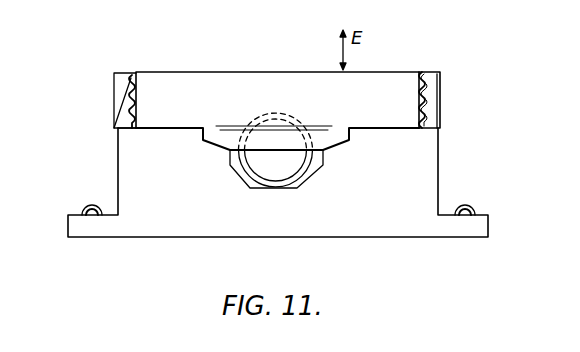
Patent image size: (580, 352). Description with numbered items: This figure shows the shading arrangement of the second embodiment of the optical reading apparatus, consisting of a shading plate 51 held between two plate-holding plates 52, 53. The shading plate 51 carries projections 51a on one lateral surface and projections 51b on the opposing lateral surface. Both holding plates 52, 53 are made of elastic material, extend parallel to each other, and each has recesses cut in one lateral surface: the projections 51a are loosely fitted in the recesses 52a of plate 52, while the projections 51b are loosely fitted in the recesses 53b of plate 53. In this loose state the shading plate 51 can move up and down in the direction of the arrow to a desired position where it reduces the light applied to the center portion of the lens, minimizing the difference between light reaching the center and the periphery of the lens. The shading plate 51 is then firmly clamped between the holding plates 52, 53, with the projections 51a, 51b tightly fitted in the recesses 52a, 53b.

The shading plate 51 is at (239, 82).
The projections 51a is at (414, 82).
The projections 51b is at (137, 82).
The plate-holding plate 52 is at (437, 86).
The recesses 52a is at (434, 106).
The plate-holding plate 53 is at (120, 82).
The recesses 53b is at (114, 129).